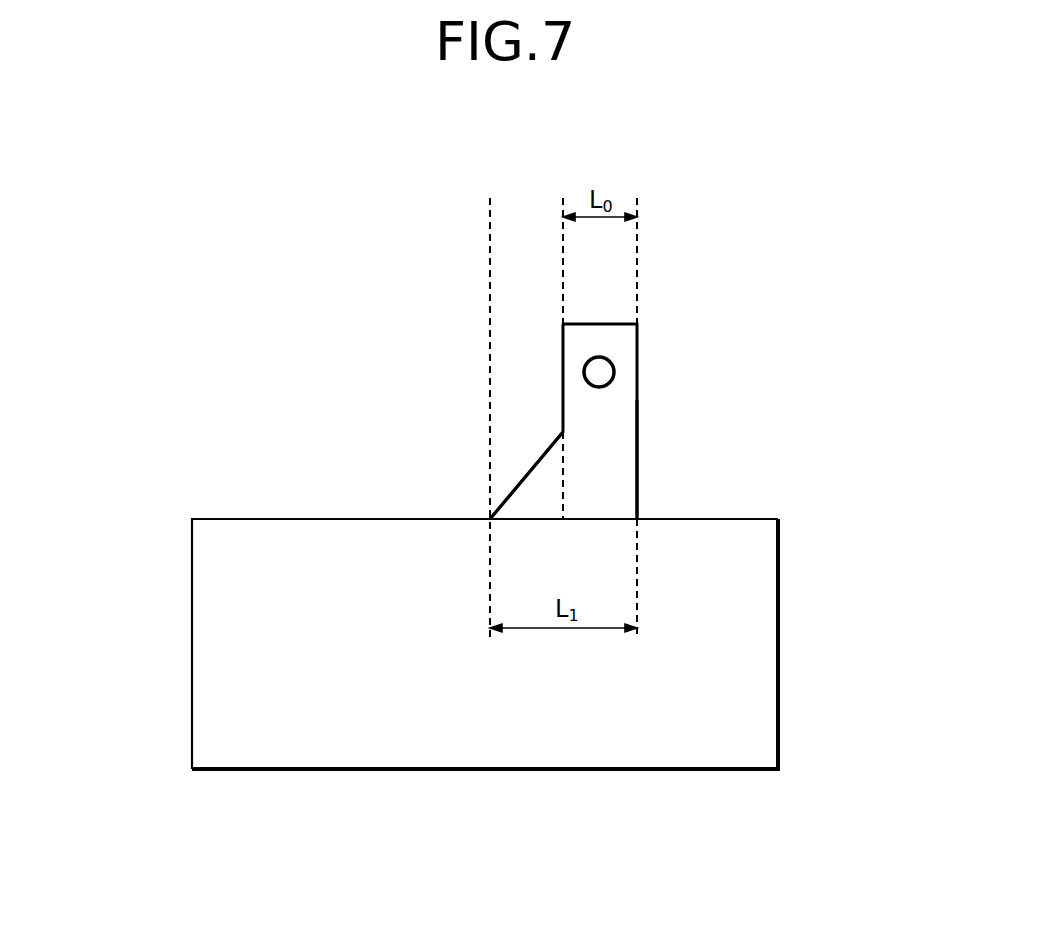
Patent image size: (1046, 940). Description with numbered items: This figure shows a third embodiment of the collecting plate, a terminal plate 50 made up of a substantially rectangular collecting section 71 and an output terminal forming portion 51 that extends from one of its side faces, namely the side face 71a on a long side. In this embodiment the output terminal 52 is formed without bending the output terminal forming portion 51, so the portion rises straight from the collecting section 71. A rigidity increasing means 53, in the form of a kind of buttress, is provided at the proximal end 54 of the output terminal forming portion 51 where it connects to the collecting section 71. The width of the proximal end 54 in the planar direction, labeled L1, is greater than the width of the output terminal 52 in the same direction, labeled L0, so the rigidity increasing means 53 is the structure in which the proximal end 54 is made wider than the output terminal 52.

The terminal plate 50 is at (653, 357).
The output terminal forming portion 51 is at (553, 395).
The output terminal 52 is at (620, 343).
The rigidity increasing means 53 is at (535, 503).
The proximal end 54 is at (619, 463).
The collecting section 71 is at (192, 707).
The side face 71a is at (278, 519).